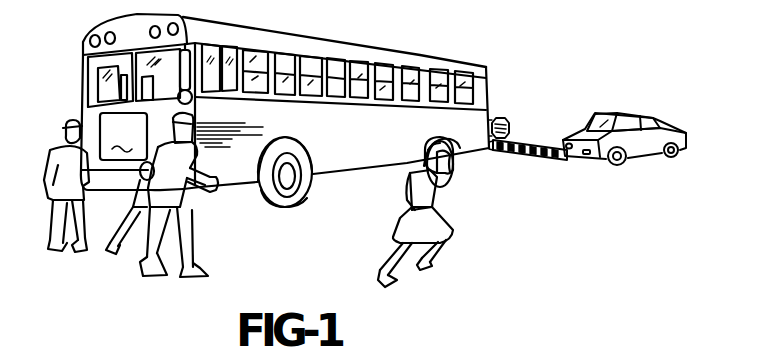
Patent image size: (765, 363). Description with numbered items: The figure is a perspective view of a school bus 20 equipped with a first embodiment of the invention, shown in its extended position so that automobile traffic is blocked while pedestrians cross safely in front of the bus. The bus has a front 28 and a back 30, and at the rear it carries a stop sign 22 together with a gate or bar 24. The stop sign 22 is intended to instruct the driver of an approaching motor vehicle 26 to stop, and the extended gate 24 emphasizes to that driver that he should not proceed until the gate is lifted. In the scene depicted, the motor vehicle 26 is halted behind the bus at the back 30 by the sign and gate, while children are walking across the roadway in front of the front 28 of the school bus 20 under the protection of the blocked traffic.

The school bus 20 is at (366, 192).
The stop sign 22 is at (529, 88).
The gate or bar 24 is at (527, 156).
The motor vehicle 26 is at (629, 113).
The front 28 is at (123, 136).
The back 30 is at (486, 67).